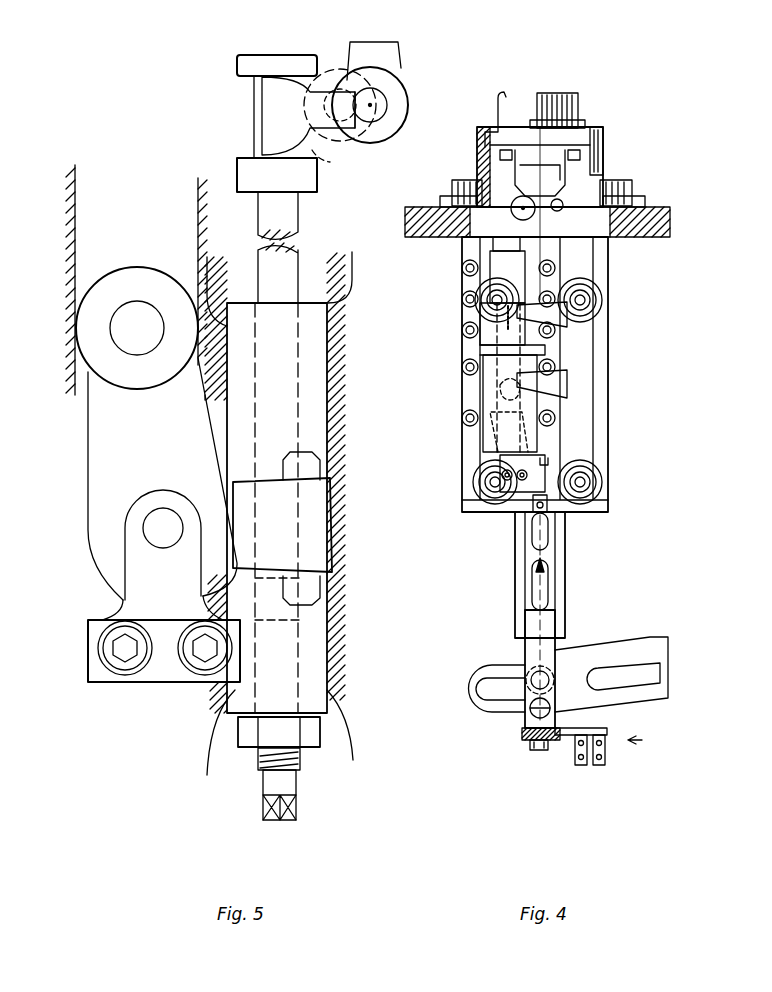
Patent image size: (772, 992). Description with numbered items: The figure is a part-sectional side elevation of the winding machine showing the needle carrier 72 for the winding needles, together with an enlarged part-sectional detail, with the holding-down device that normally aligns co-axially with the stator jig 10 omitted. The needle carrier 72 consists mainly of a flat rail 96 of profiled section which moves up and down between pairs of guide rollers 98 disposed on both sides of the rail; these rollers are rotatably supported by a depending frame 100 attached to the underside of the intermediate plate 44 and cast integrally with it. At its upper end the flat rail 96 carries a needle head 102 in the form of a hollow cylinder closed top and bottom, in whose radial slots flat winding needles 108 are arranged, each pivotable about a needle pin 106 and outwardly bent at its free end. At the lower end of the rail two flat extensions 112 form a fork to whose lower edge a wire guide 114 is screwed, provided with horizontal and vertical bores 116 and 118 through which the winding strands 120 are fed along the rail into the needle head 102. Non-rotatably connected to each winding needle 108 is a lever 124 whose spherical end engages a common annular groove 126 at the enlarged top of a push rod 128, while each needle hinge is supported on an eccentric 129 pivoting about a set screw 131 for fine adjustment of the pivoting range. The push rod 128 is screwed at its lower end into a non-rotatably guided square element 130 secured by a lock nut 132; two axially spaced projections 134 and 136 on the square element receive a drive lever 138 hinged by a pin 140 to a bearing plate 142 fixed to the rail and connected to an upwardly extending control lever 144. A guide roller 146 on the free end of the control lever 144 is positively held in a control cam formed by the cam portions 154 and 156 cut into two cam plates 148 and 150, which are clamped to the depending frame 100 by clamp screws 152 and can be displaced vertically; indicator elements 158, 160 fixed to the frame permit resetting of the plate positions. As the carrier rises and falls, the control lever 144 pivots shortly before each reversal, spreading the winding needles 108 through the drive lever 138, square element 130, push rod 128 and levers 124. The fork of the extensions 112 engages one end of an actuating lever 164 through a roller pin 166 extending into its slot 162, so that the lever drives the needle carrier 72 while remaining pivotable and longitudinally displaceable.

In FIG. 4, the stator jig 10 is at (613, 124).
In FIG. 4, the intermediate plate 44 is at (440, 206).
In FIG. 4, the needle carrier 72 is at (580, 552).
In FIG. 5, the flat rail 96 is at (374, 642).
In FIG. 4, the flat rail 96 is at (557, 590).
In FIG. 4, the guide rollers 98 is at (588, 300).
In FIG. 4, the depending frame 100 is at (600, 430).
In FIG. 4, the needle head 102 is at (483, 177).
In FIG. 5, the needle pin 106 is at (388, 85).
In FIG. 4, the needle pin 106 is at (562, 205).
In FIG. 5, the winding needle 108 is at (368, 50).
In FIG. 4, the winding needle 108 is at (553, 170).
In FIG. 4, the flat extensions 112 is at (528, 645).
In FIG. 4, the wire guide 114 is at (522, 733).
In FIG. 4, the horizontal bores 116 is at (600, 746).
In FIG. 4, the vertical bores 118 is at (537, 741).
In FIG. 4, the winding strands 120 is at (617, 738).
In FIG. 5, the lever 124 is at (330, 88).
In FIG. 4, the lever 124 is at (560, 216).
In FIG. 5, the annular groove 126 is at (262, 148).
In FIG. 5, the push rod 128 is at (290, 268).
In FIG. 4, the push rod 128 is at (537, 504).
In FIG. 5, the eccentric 129 is at (330, 82).
In FIG. 4, the eccentric 129 is at (482, 192).
In FIG. 5, the square element 130 is at (315, 370).
In FIG. 5, the set screw 131 is at (326, 160).
In FIG. 4, the set screw 131 is at (523, 214).
In FIG. 5, the lock nut 132 is at (309, 732).
In FIG. 5, the projection 134 is at (316, 464).
In FIG. 5, the projection 136 is at (313, 588).
In FIG. 5, the drive lever 138 is at (288, 523).
In FIG. 5, the pin 140 is at (160, 531).
In FIG. 5, the bearing plate 142 is at (98, 676).
In FIG. 5, the control lever 144 is at (113, 457).
In FIG. 5, the guide roller 146 is at (108, 287).
In FIG. 4, the guide roller 146 is at (512, 386).
In FIG. 4, the cam plate 148 is at (488, 310).
In FIG. 4, the cam plate 150 is at (488, 378).
In FIG. 4, the clamp screws 152 is at (470, 276).
In FIG. 4, the cam portion 154 is at (503, 330).
In FIG. 5, the cam portion 156 is at (147, 200).
In FIG. 4, the cam portion 156 is at (497, 438).
In FIG. 4, the indicator element 158 is at (563, 327).
In FIG. 4, the indicator element 160 is at (567, 385).
In FIG. 4, the slot 162 is at (490, 689).
In FIG. 4, the actuating lever 164 is at (577, 657).
In FIG. 4, the roller pin 166 is at (538, 681).